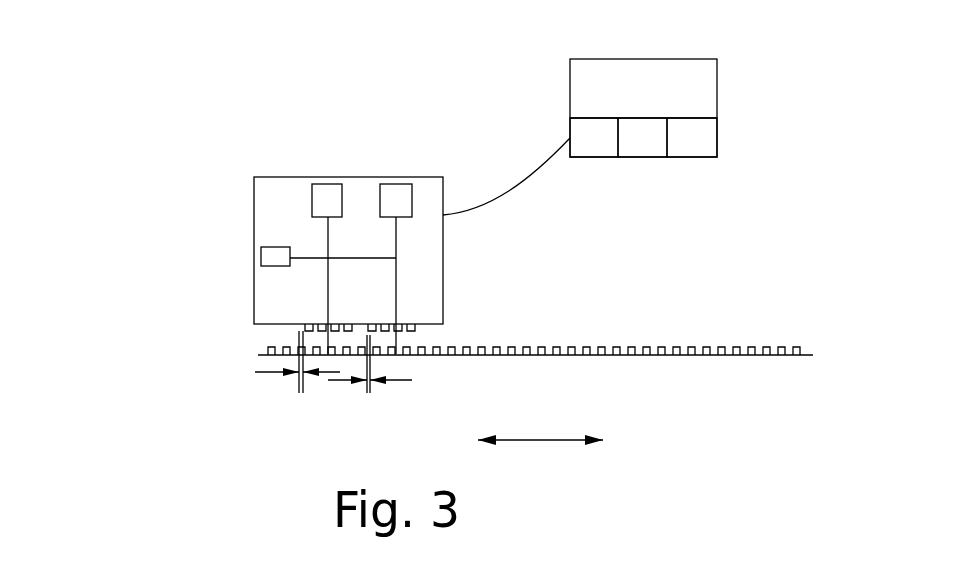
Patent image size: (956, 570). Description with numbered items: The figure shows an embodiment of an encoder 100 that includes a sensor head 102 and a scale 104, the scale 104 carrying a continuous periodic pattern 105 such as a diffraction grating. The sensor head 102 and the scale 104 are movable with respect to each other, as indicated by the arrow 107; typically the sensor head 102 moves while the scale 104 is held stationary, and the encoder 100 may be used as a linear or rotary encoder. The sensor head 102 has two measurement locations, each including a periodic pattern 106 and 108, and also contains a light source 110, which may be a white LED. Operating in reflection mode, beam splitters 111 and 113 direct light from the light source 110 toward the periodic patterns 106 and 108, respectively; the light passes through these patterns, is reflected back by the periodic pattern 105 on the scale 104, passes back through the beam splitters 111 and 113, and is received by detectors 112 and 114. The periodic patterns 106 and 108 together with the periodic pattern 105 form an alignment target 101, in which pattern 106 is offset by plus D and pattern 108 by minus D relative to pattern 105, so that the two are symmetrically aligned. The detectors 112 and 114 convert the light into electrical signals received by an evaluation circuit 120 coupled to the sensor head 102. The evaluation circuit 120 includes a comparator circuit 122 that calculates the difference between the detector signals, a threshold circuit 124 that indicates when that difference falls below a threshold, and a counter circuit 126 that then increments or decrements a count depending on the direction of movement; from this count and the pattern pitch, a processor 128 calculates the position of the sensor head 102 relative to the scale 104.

The encoder 100 is at (170, 145).
The alignment target 101 is at (227, 341).
The sensor head 102 is at (443, 314).
The scale 104 is at (725, 356).
The periodic pattern 105 is at (710, 325).
The periodic pattern 106 is at (309, 313).
The arrow 107 is at (533, 440).
The periodic pattern 108 is at (378, 313).
The light source 110 is at (261, 256).
The beam splitter 111 is at (335, 265).
The detector 112 is at (312, 197).
The beam splitter 113 is at (388, 250).
The detector 114 is at (380, 197).
The evaluation circuit 120 is at (540, 77).
The comparator circuit 122 is at (598, 157).
The threshold circuit 124 is at (638, 157).
The counter circuit 126 is at (687, 157).
The processor 128 is at (717, 98).